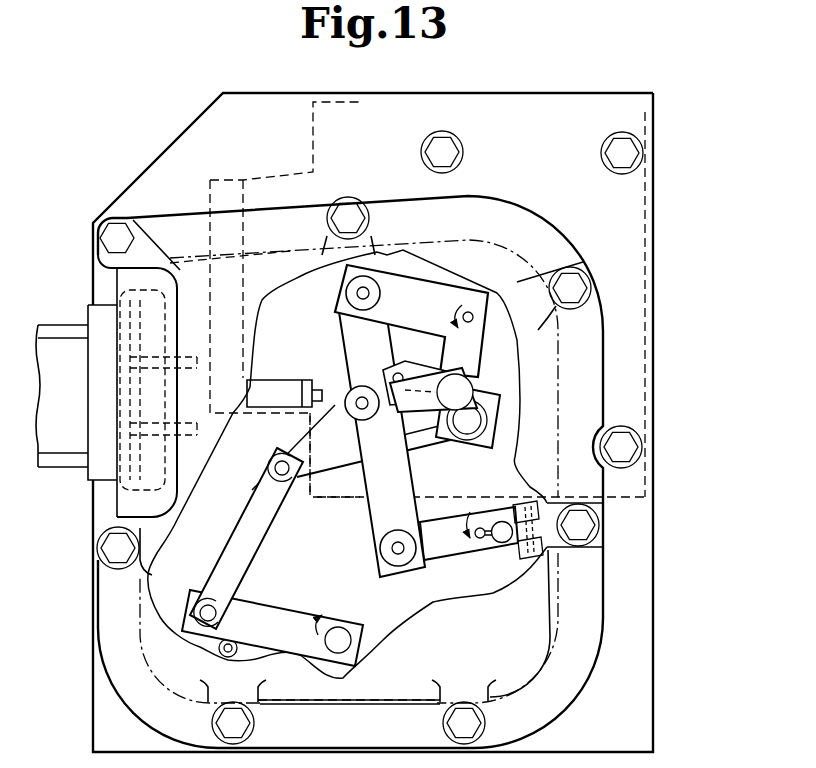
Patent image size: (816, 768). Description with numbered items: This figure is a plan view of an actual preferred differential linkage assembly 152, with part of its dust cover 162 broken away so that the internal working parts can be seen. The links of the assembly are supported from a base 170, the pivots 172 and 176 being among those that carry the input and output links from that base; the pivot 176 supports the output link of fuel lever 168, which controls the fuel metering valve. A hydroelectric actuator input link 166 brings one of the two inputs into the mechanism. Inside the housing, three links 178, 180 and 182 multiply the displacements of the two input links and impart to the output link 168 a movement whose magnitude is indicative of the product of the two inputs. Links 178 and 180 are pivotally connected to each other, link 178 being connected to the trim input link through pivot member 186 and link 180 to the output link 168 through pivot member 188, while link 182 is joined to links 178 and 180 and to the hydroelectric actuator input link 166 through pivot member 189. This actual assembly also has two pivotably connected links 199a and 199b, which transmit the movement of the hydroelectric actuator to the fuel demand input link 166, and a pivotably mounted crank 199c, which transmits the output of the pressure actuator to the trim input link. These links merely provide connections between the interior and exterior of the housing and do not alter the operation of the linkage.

The differential linkage assembly 152 is at (166, 123).
The dust cover 162 is at (583, 253).
The hydroelectric actuator input link 166 is at (327, 473).
The output link of fuel lever 168 is at (456, 560).
The base 170 is at (657, 603).
The pivot 172 is at (470, 310).
The pivot 176 is at (500, 545).
The link 178 is at (342, 338).
The link 180 is at (413, 478).
The link 182 is at (422, 444).
The pivot member 186 is at (358, 293).
The pivot member 188 is at (392, 550).
The pivot member 189 is at (493, 428).
The link 199a is at (292, 608).
The link 199b is at (234, 550).
The crank 199c is at (414, 294).